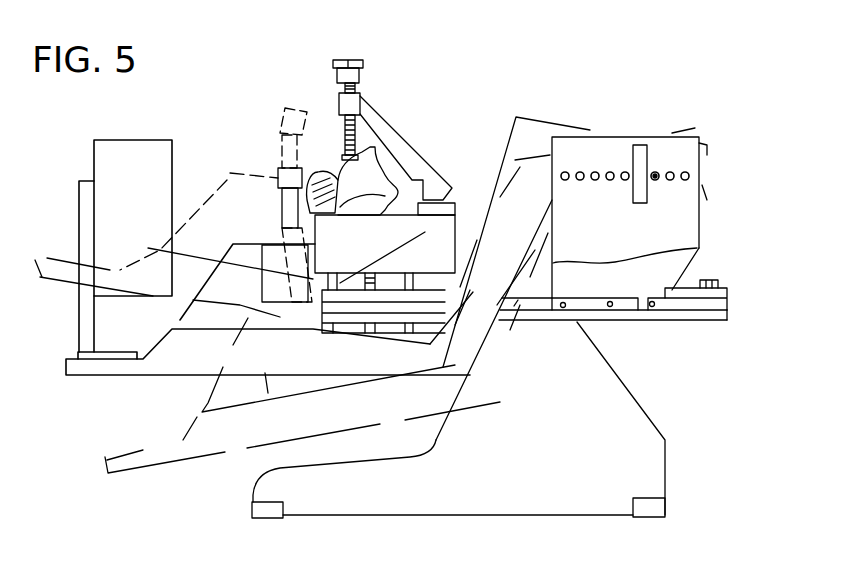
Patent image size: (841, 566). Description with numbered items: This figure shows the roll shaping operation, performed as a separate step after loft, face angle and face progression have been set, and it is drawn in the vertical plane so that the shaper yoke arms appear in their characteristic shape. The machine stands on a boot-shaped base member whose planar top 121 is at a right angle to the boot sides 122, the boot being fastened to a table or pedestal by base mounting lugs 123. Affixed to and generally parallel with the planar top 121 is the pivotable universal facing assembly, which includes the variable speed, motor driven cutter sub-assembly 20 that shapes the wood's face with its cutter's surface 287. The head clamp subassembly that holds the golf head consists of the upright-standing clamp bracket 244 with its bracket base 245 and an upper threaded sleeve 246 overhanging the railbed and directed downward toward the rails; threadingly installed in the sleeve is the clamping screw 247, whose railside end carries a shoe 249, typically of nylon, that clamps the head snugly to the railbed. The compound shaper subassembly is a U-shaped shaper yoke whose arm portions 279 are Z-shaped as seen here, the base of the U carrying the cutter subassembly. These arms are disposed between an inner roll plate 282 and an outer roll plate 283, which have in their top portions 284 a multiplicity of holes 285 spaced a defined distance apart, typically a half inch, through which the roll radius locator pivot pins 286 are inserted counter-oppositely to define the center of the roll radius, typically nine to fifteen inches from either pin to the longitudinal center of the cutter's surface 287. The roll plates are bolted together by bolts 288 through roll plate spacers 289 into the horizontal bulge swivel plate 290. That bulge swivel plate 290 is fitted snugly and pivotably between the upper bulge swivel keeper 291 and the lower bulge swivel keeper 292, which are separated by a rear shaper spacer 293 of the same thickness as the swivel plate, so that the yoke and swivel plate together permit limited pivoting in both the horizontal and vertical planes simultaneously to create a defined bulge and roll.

The cutter sub-assembly 20 is at (272, 164).
The cutter's surface 287 is at (303, 170).
The threaded sleeve 246 is at (338, 106).
The shoe 249 is at (351, 62).
The clamping screw 247 is at (356, 92).
The clamp bracket 244 is at (393, 114).
The bracket base 245 is at (436, 203).
The arm portions 279 is at (518, 117).
The top portions 284 is at (592, 152).
The roll radius locator pivot pins 286 is at (643, 160).
The holes 285 is at (655, 170).
The outer roll plate 283 is at (613, 233).
The inner roll plate 282 is at (663, 287).
The upper bulge swivel keeper 291 is at (749, 260).
The rear shaper spacer 293 is at (708, 303).
The lower bulge swivel keeper 292 is at (728, 317).
The bolts 288 is at (563, 310).
The roll plate spacers 289 is at (588, 305).
The planar top 121 is at (577, 323).
The bulge swivel plate 290 is at (516, 302).
The boot sides 122 is at (533, 478).
The base mounting lugs 123 is at (647, 512).